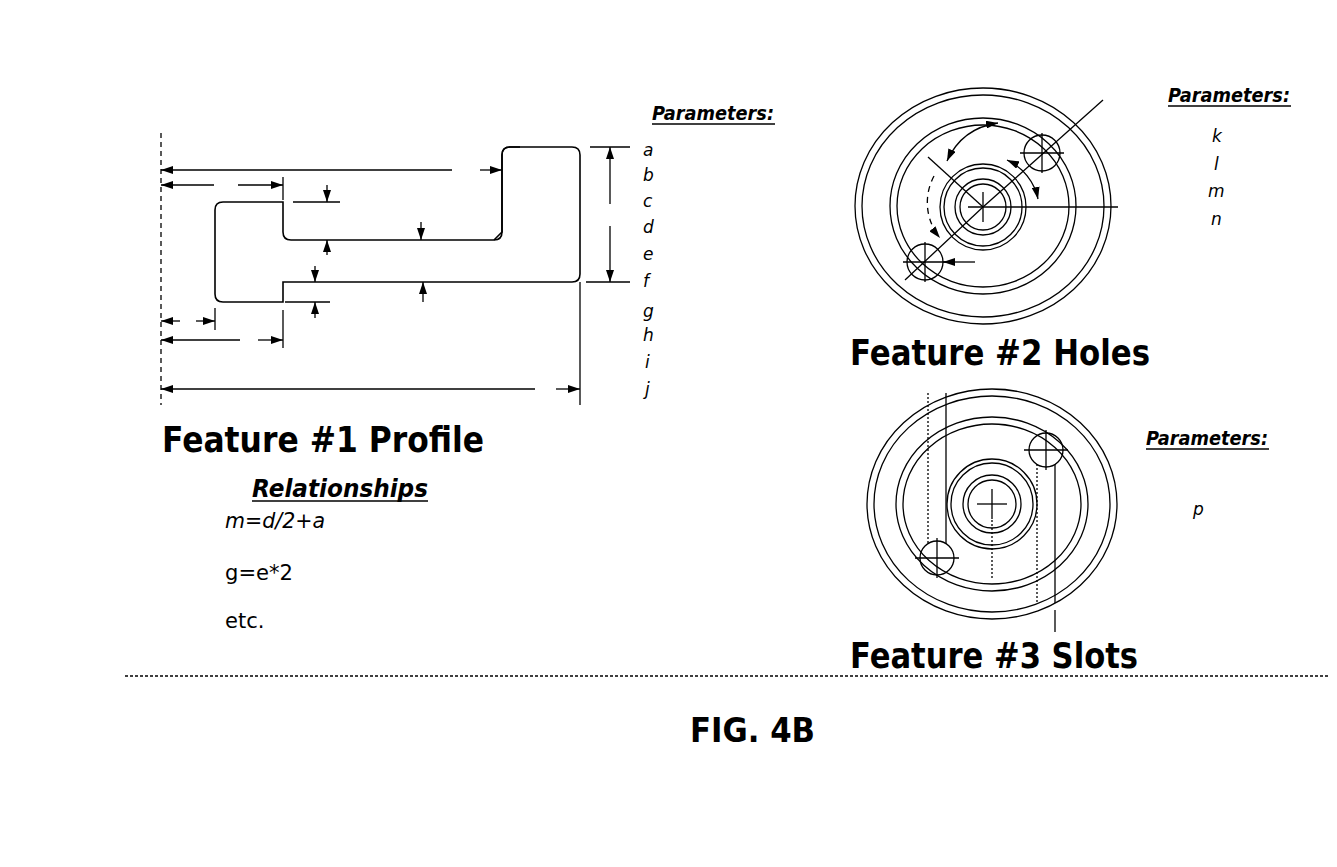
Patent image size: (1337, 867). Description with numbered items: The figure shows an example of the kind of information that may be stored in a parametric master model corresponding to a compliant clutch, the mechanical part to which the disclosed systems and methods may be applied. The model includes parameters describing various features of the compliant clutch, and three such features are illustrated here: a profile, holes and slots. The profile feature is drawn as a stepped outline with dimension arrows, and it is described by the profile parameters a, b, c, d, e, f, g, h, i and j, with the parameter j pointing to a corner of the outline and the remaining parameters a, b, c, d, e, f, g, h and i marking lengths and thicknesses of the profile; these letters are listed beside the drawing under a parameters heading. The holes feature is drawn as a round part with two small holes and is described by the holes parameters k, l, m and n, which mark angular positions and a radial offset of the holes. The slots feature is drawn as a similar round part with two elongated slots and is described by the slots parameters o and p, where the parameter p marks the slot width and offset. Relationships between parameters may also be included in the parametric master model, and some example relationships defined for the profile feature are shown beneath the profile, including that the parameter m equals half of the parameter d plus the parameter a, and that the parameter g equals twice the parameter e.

The profile parameter a is at (188, 319).
The profile parameter b is at (222, 330).
The profile parameter c is at (331, 170).
The profile parameter d is at (370, 389).
The profile parameter e is at (316, 220).
The profile parameter f is at (418, 262).
The profile parameter g is at (608, 214).
The profile parameter h is at (222, 187).
The profile parameter i is at (307, 292).
The profile parameter j is at (482, 176).
The holes parameter k is at (1026, 179).
The holes parameter l is at (932, 207).
The holes parameter m is at (972, 142).
The holes parameter n is at (966, 263).
The slots parameter o is at (1059, 485).
The slots parameter p is at (1037, 557).